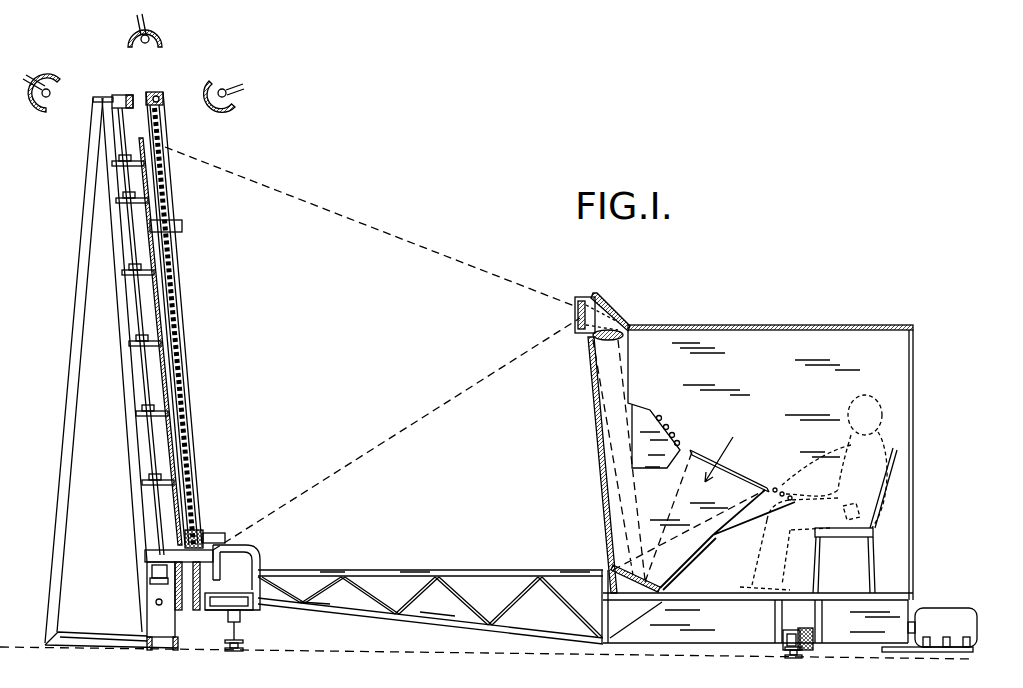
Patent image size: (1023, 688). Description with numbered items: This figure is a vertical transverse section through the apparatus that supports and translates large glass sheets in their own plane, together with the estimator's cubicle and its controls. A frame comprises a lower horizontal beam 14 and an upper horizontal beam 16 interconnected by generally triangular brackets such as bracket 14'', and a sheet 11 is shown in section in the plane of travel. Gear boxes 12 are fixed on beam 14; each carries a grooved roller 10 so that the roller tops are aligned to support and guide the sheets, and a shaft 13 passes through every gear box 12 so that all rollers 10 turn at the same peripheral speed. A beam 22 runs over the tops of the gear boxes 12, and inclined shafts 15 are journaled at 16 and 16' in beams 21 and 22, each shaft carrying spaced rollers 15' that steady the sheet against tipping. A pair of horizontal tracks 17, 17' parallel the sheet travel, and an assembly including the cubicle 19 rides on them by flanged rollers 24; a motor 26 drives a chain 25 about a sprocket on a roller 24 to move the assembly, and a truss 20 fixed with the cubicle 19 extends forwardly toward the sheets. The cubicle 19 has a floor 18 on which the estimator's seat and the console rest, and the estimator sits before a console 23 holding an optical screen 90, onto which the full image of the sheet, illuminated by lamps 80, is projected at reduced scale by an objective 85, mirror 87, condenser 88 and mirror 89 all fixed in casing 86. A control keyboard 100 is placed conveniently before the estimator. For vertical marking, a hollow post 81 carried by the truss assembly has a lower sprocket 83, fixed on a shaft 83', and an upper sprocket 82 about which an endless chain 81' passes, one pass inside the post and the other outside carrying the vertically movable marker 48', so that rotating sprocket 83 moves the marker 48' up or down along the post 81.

The roller 10 is at (180, 608).
The sheet 11 is at (155, 383).
The gear box 12 is at (163, 622).
The shaft 13 is at (156, 602).
The lower horizontal beam 14 is at (111, 657).
The triangular bracket 14'' is at (64, 370).
The shaft 15 is at (106, 331).
The roller 15' is at (109, 320).
The upper horizontal beam 16 is at (120, 86).
The lower journal 16' is at (133, 569).
The track 17 is at (234, 647).
The track 17' is at (796, 667).
The cockpit floor 18 is at (926, 601).
The cubicle 19 is at (756, 325).
The truss 20 is at (412, 568).
The beam 21 is at (104, 97).
The beam 22 is at (153, 569).
The console 23 is at (725, 450).
The flanged roller 24 is at (253, 630).
The chain 25 is at (812, 648).
The motor 26 is at (978, 623).
The vertically-movable marker 48' is at (183, 341).
The lamp 80 is at (162, 40).
The vertical post 81 is at (190, 325).
The endless chain 81' is at (195, 325).
The upper sprocket 82 is at (166, 124).
The lower sprocket 83 is at (210, 521).
The shaft 83' is at (240, 512).
The objective 85 is at (576, 316).
The casing 86 is at (590, 402).
The mirror 87 is at (604, 311).
The condenser 88 is at (620, 325).
The mirror 89 is at (668, 585).
The optical screen 90 is at (759, 474).
The control keyboard 100 is at (674, 437).